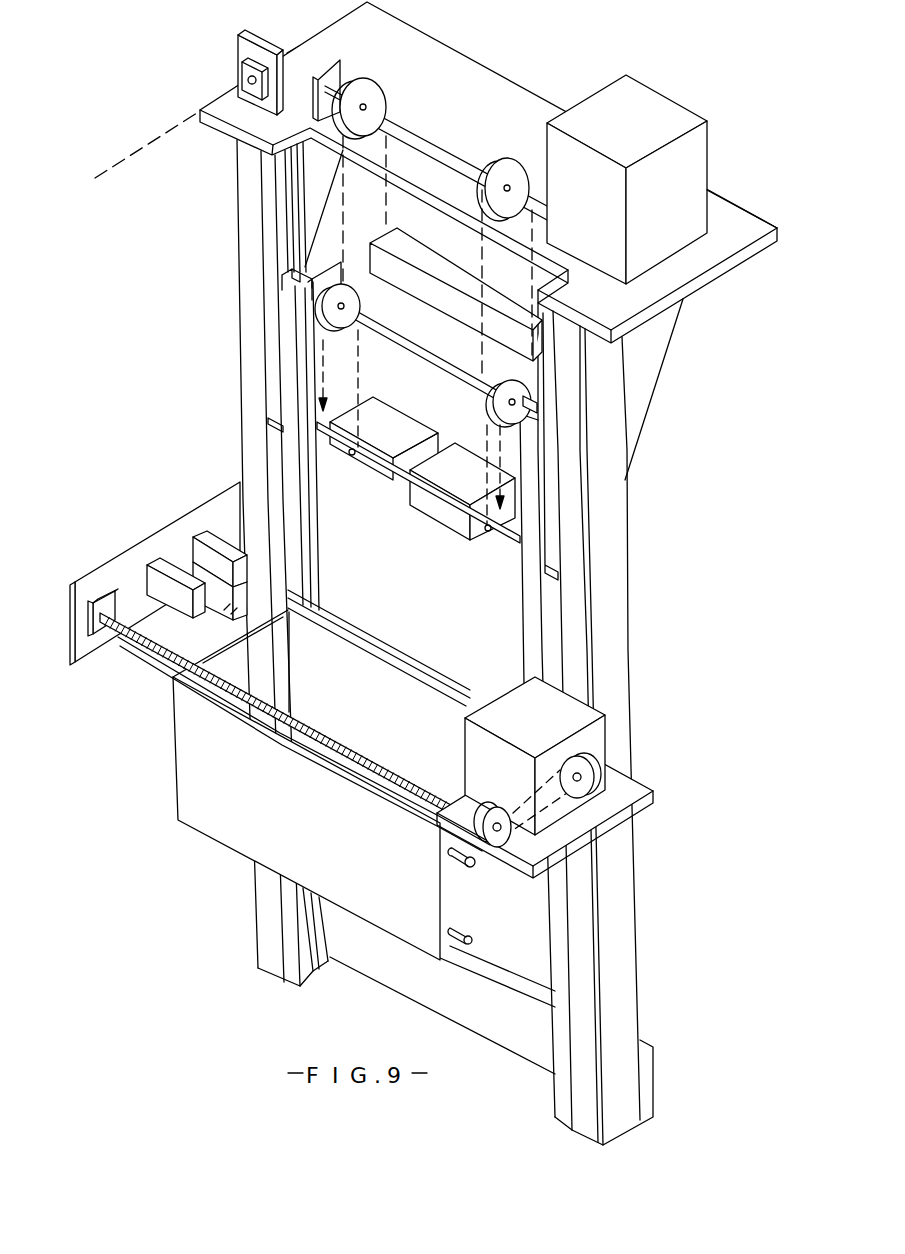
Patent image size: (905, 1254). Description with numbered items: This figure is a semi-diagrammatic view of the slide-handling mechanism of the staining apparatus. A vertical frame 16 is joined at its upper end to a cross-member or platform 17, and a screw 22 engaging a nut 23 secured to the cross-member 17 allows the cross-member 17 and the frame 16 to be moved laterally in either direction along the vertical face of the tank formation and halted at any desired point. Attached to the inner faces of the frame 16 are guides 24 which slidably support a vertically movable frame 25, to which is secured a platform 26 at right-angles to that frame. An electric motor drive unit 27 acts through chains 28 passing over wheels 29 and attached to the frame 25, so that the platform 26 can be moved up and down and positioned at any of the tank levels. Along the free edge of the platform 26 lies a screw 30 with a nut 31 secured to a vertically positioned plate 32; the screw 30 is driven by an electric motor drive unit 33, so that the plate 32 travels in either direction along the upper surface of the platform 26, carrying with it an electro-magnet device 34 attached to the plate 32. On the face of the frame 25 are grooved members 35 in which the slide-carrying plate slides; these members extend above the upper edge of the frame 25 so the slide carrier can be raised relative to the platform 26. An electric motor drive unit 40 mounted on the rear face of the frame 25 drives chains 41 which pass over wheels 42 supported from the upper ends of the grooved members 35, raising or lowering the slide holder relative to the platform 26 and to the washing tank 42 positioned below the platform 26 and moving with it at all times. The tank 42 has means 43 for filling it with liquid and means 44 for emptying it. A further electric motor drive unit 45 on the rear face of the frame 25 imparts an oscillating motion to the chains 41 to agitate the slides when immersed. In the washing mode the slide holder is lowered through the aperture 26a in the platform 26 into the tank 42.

The frame 16 is at (272, 890).
The cross-member or platform 17 is at (456, 56).
The screw 22 is at (155, 142).
The nut 23 is at (240, 72).
The guides 24 is at (272, 327).
The vertically movable frame 25 is at (424, 575).
The platform 26 is at (170, 658).
The aperture 26a is at (365, 669).
The electric motor drive unit 27 is at (638, 150).
The chains 28 is at (345, 201).
The wheels 29 is at (380, 101).
The screw 30 is at (333, 740).
The nut 31 is at (103, 592).
The vertically positioned plate 32 is at (178, 535).
The electric motor drive unit 33 is at (595, 735).
The electro-magnet device 34 is at (210, 545).
The grooved members 35 is at (290, 291).
The electric motor drive unit 40 is at (407, 430).
The chains 41 is at (362, 383).
The wheels / washing tank 42 is at (357, 299).
The filling means 43 is at (463, 867).
The emptying means 44 is at (462, 946).
The electric motor drive unit 45 is at (467, 481).